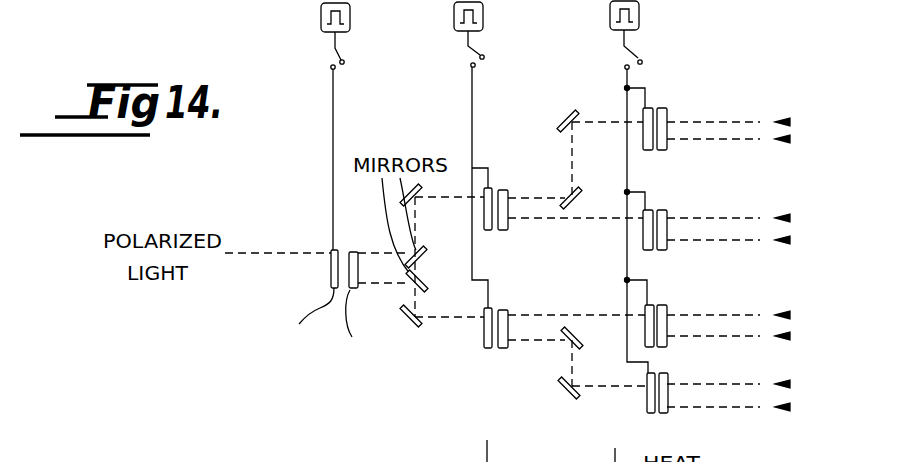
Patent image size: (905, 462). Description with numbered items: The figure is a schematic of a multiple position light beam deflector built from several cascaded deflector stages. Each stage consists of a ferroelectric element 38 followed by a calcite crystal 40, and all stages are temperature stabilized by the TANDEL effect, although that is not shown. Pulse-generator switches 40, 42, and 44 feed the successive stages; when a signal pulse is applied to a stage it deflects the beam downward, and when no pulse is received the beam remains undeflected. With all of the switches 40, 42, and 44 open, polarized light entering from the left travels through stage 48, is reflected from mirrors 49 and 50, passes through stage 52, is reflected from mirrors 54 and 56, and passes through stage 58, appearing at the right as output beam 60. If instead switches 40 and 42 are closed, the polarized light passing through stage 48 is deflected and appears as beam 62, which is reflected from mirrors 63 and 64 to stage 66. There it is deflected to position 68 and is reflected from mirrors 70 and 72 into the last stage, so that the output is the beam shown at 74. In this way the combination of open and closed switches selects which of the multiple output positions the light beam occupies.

The ferroelectric element 38 is at (241, 335).
The calcite crystal / switch 40 is at (342, 53).
The switch 42 is at (477, 50).
The switch 44 is at (636, 51).
The stage 48 is at (372, 217).
The mirror 49 is at (424, 256).
The mirror 50 is at (416, 197).
The stage 52 is at (516, 176).
The mirror 54 is at (578, 205).
The mirror 56 is at (563, 122).
The stage 58 is at (688, 86).
The output beam 60 is at (716, 120).
The beam 62 is at (381, 288).
The mirror 63 is at (426, 284).
The mirror 64 is at (420, 320).
The stage 66 is at (528, 291).
The position 68 is at (532, 343).
The mirror 70 is at (582, 336).
The mirror 72 is at (569, 393).
The output beam 74 is at (718, 384).